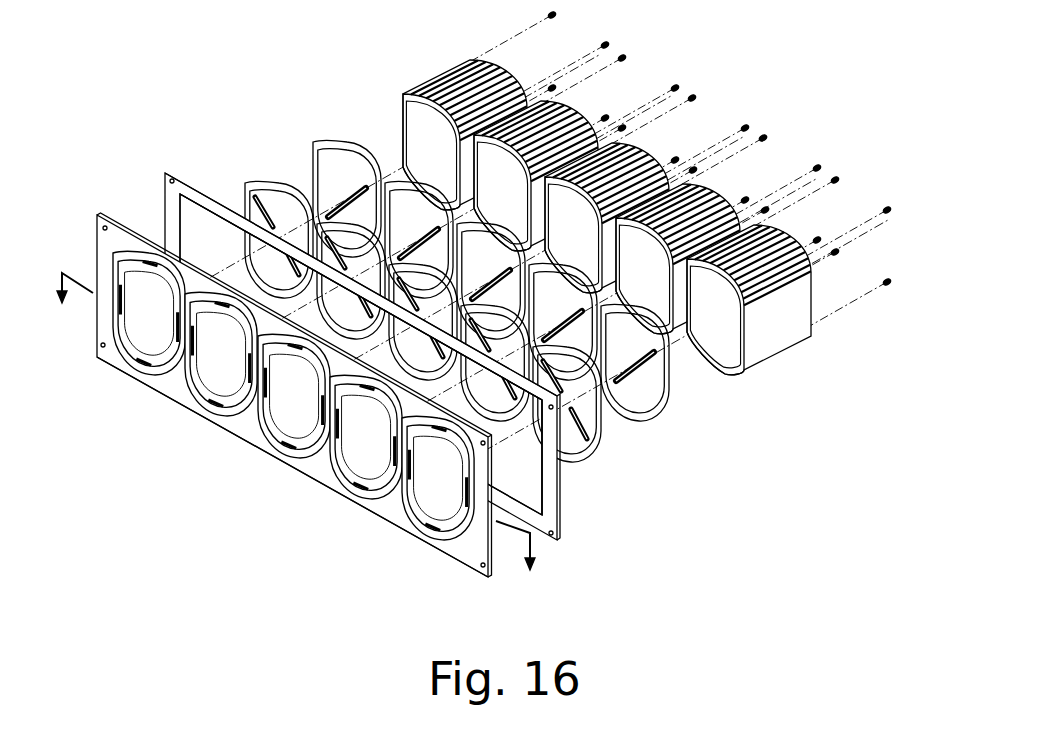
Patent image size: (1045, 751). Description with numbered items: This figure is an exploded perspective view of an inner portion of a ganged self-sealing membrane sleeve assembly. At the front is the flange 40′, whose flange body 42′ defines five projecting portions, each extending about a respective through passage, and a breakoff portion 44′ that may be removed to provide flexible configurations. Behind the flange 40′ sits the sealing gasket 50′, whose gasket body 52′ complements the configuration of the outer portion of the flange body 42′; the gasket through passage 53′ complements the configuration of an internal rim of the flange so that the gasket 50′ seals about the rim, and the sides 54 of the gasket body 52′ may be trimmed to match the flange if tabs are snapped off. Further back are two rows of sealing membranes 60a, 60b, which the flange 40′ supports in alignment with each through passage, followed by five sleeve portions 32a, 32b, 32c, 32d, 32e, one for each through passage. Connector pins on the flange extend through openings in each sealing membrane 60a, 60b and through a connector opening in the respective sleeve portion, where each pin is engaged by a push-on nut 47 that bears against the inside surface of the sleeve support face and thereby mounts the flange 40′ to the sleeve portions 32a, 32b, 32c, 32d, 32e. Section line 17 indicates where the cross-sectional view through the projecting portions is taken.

The section line 17 is at (293, 426).
The sleeve portion 32a is at (777, 321).
The sleeve portion 32b is at (708, 190).
The sleeve portion 32c is at (640, 148).
The sleeve portion 32d is at (573, 110).
The sleeve portion 32e is at (406, 96).
The flange 40′ is at (491, 568).
The flange body 42′ is at (258, 432).
The breakoff portion 44′ is at (103, 230).
The push-on nut 47 is at (893, 287).
The sealing gasket 50′ is at (561, 523).
The gasket body 52′ is at (216, 207).
The gasket through passage 53′ is at (183, 236).
The sides of the gasket body 54 is at (555, 479).
The sealing membrane 60a is at (604, 450).
The sealing membrane 60b is at (675, 405).